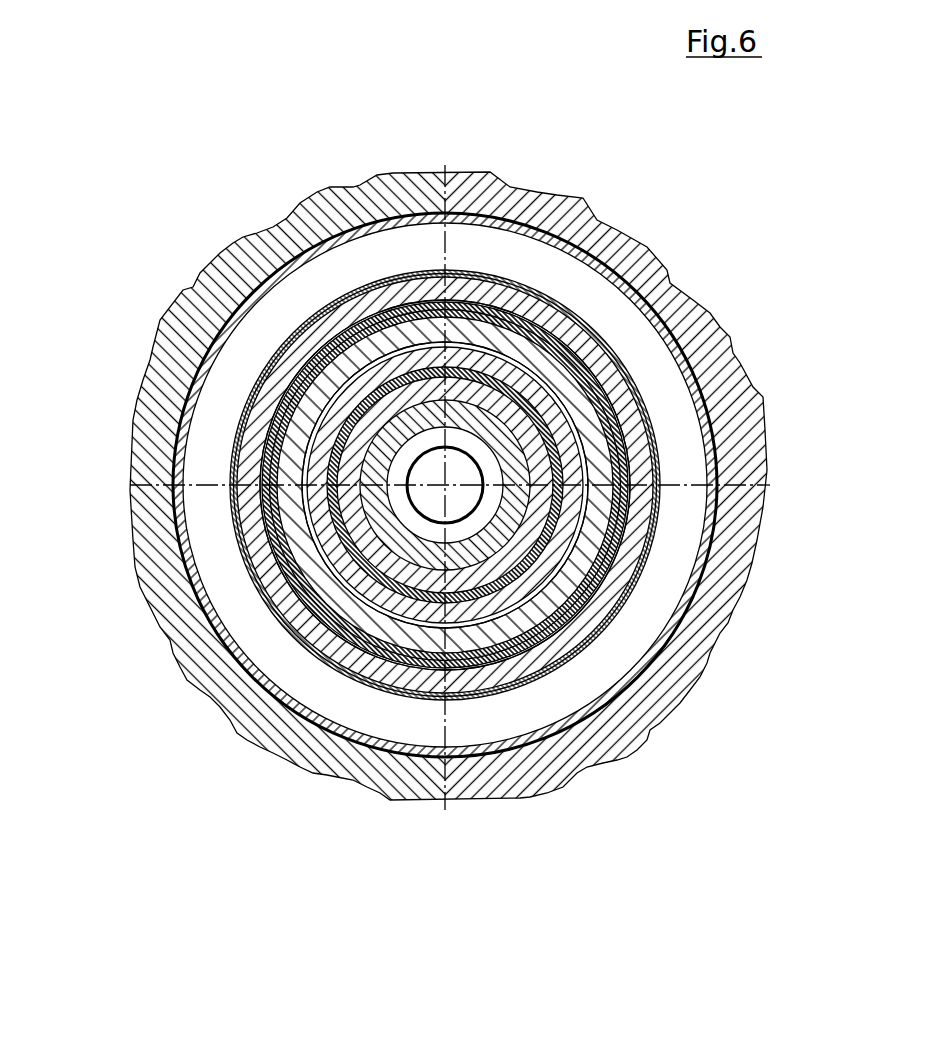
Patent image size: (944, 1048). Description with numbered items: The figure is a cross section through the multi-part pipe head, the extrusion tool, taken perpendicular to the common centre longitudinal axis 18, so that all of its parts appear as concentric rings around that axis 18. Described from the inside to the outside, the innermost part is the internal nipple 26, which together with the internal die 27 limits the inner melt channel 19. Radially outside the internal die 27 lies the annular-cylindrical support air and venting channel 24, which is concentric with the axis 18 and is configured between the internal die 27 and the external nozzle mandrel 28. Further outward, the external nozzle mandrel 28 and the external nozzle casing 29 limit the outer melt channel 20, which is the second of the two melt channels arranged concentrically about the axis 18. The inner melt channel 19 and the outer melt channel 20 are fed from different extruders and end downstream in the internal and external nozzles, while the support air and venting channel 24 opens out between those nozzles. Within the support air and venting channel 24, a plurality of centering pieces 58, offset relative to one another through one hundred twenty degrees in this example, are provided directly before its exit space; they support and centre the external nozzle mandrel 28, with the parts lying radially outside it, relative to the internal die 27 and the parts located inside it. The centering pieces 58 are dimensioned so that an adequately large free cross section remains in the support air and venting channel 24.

The common centre longitudinal axis 18 is at (445, 485).
The inner melt channel 19 is at (653, 445).
The outer melt channel 20 is at (577, 410).
The support air and venting channel 24 is at (360, 374).
The internal nipple 26 is at (276, 601).
The internal die 27 is at (322, 468).
The external nozzle mandrel 28 is at (504, 332).
The external nozzle casing 29 is at (540, 327).
The centering pieces 58 is at (302, 365).